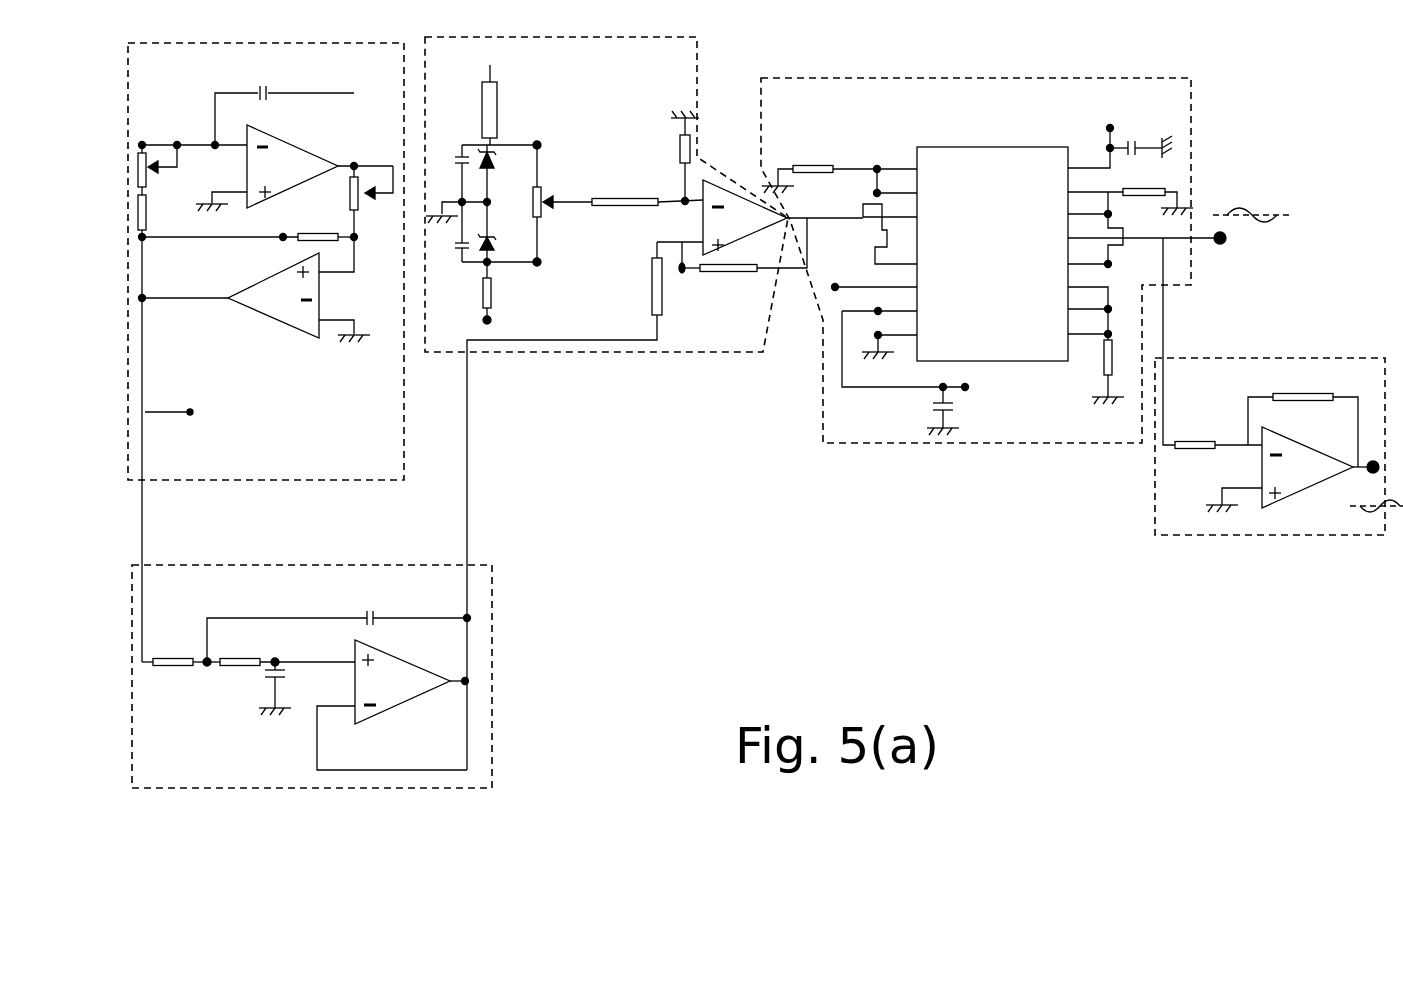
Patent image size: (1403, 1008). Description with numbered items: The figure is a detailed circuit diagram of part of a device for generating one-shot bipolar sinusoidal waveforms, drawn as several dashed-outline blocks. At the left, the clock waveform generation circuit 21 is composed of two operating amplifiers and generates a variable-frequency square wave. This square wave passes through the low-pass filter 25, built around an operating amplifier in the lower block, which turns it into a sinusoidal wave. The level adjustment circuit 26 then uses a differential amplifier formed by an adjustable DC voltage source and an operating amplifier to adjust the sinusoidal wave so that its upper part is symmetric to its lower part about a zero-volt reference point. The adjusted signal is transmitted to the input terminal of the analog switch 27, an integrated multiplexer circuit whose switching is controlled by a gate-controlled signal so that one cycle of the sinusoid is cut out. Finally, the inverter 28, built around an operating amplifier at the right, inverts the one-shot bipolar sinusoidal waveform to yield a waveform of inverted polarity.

The clock waveform generation circuit 21 is at (377, 433).
The low-pass filter 25 is at (475, 688).
The level adjustment circuit 26 is at (663, 78).
The analog switch 27 is at (1040, 112).
The inverter 28 is at (1312, 510).